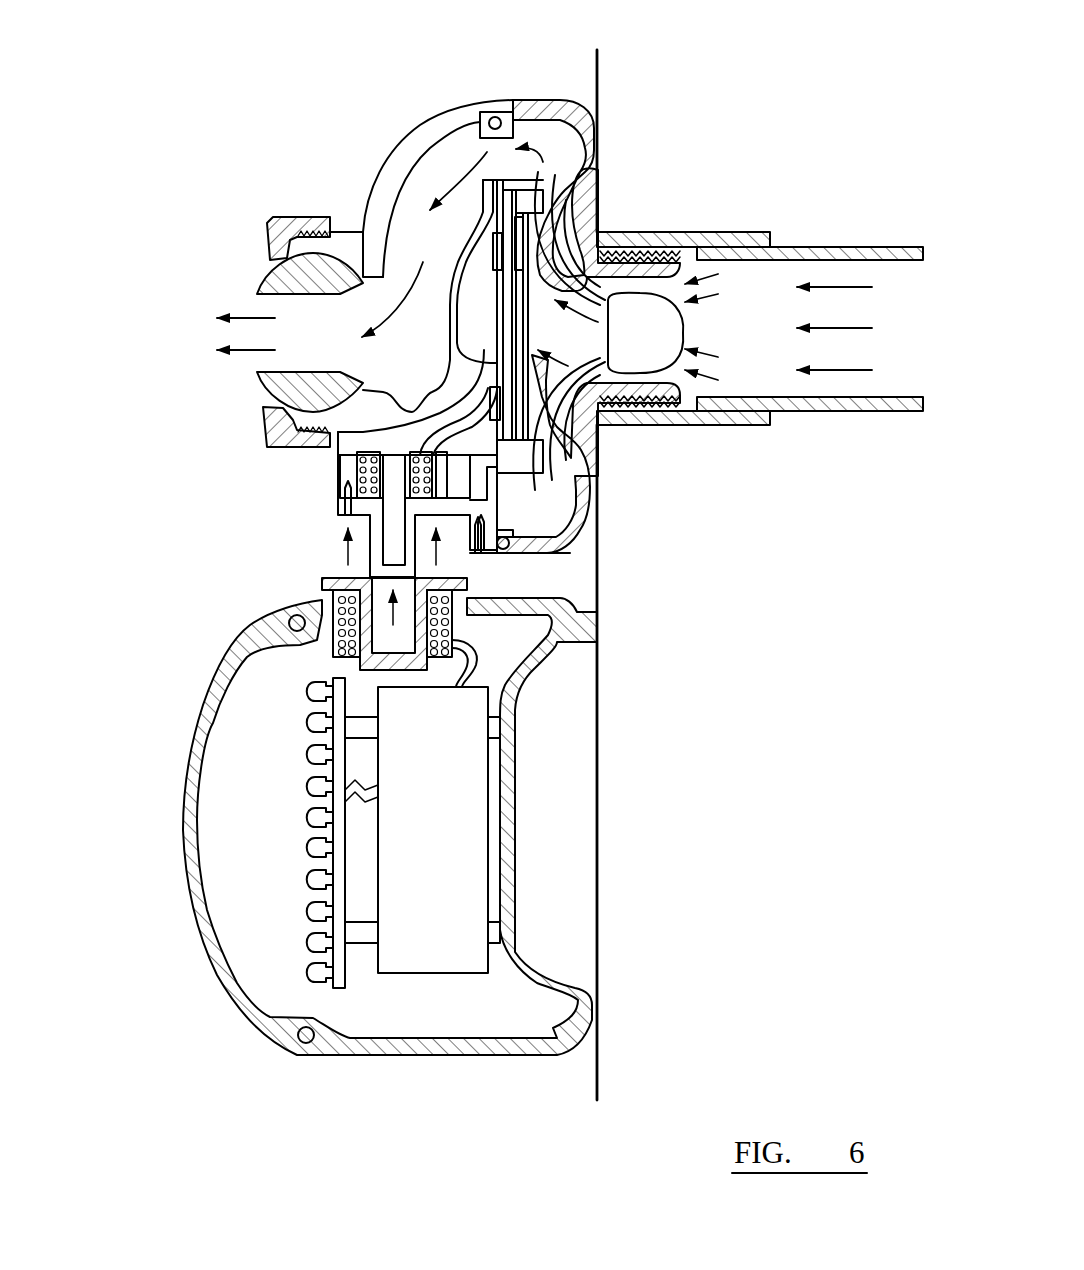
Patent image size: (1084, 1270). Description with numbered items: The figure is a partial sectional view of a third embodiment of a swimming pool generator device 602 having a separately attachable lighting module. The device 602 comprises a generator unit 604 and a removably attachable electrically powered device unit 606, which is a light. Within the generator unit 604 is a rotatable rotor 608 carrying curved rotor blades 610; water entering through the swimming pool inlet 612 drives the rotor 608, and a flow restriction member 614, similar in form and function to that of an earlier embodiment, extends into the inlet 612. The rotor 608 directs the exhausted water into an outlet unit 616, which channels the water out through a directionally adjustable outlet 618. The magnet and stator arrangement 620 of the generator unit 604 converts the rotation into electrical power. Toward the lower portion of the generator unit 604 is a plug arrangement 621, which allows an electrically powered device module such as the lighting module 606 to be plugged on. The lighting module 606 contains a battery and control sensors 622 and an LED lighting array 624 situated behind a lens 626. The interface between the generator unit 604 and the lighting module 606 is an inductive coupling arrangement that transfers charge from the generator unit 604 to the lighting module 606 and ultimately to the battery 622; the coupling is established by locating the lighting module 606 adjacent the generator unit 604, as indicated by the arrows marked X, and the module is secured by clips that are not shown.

The swimming pool generator device 602 is at (262, 490).
The generator unit 604 is at (372, 150).
The electrically powered device unit 606 is at (340, 868).
The rotor 608 is at (655, 262).
The curved rotor blades 610 is at (603, 232).
The swimming pool inlet 612 is at (767, 338).
The flow restriction member 614 is at (640, 340).
The outlet unit 616 is at (443, 150).
The directionally adjustable outlet 618 is at (267, 390).
The magnet and stator arrangement 620 is at (480, 254).
The plug arrangement 621 is at (313, 528).
The battery and control sensors 622 is at (453, 851).
The LED lighting array 624 is at (290, 848).
The lens 626 is at (190, 782).